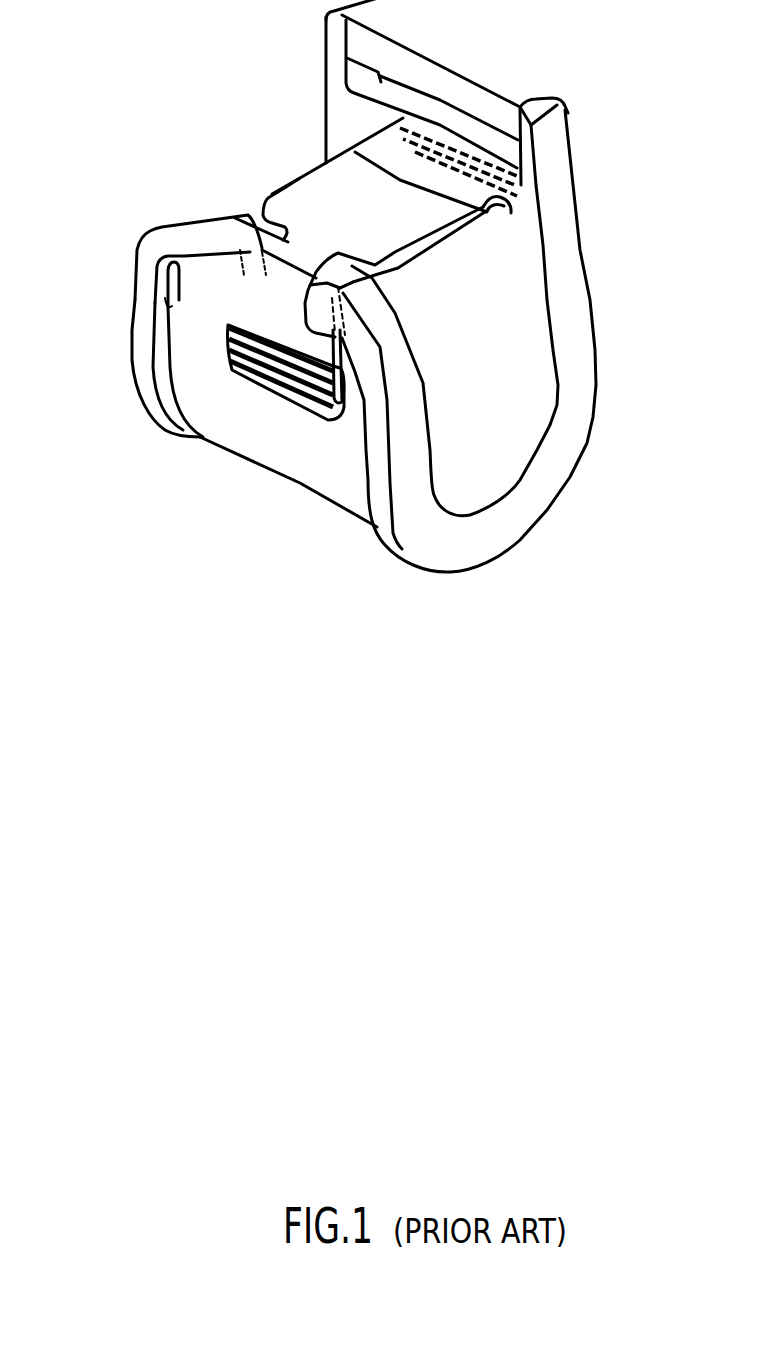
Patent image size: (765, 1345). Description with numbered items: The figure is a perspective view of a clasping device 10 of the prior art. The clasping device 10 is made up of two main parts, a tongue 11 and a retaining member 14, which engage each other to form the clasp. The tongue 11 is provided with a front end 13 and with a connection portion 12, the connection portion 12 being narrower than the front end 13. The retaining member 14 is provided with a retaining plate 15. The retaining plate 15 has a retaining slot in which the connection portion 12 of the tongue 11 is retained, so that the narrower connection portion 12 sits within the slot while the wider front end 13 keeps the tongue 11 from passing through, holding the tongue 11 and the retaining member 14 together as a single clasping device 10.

The clasping device 10 is at (517, 540).
The tongue 11 is at (418, 223).
The connection portion 12 is at (258, 246).
The front end 13 is at (276, 330).
The retaining member 14 is at (193, 372).
The retaining plate 15 is at (178, 246).